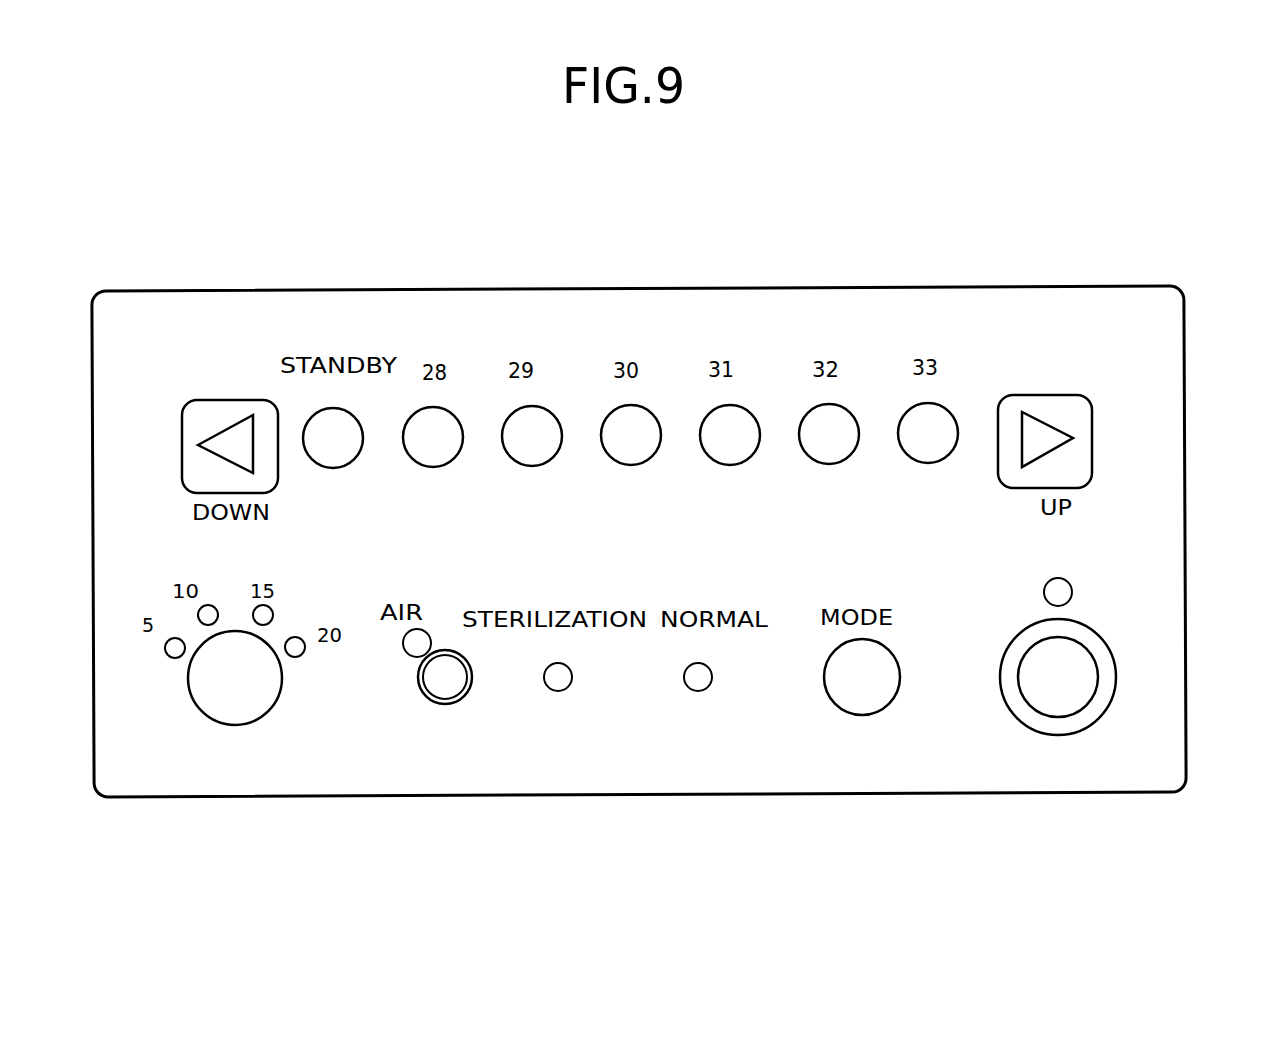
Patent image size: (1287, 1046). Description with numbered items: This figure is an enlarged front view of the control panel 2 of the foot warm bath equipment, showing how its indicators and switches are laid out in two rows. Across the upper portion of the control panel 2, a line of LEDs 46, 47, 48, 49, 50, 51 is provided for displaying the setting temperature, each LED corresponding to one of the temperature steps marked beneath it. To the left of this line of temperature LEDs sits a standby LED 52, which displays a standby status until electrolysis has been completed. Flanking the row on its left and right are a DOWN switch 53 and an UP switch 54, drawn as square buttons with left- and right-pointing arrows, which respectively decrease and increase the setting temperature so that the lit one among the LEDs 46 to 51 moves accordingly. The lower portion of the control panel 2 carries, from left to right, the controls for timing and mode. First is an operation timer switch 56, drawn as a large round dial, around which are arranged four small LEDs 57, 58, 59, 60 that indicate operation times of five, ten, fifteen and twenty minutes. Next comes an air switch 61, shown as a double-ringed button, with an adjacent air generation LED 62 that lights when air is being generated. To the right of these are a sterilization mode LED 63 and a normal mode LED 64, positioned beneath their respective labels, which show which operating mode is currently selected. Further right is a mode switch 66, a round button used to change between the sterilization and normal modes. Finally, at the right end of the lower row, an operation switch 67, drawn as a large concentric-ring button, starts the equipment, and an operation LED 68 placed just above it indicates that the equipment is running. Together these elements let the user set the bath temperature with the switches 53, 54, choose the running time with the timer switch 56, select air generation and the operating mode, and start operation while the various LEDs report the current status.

The control panel 2 is at (1078, 288).
The LED 46 is at (462, 426).
The LED 47 is at (554, 413).
The LED 48 is at (654, 413).
The LED 49 is at (753, 413).
The LED 50 is at (852, 412).
The LED 51 is at (951, 410).
The standby LED 52 is at (307, 423).
The DOWN switch 53 is at (207, 400).
The UP switch 54 is at (1083, 393).
The operation timer switch 56 is at (262, 720).
The LED 57 is at (167, 653).
The LED 58 is at (217, 607).
The LED 59 is at (274, 617).
The LED 60 is at (301, 655).
The air switch 61 is at (462, 697).
The air generation LED 62 is at (426, 629).
The sterilization mode LED 63 is at (569, 682).
The normal mode LED 64 is at (709, 681).
The mode switch 66 is at (900, 680).
The operation switch 67 is at (1110, 647).
The operation LED 68 is at (1069, 582).